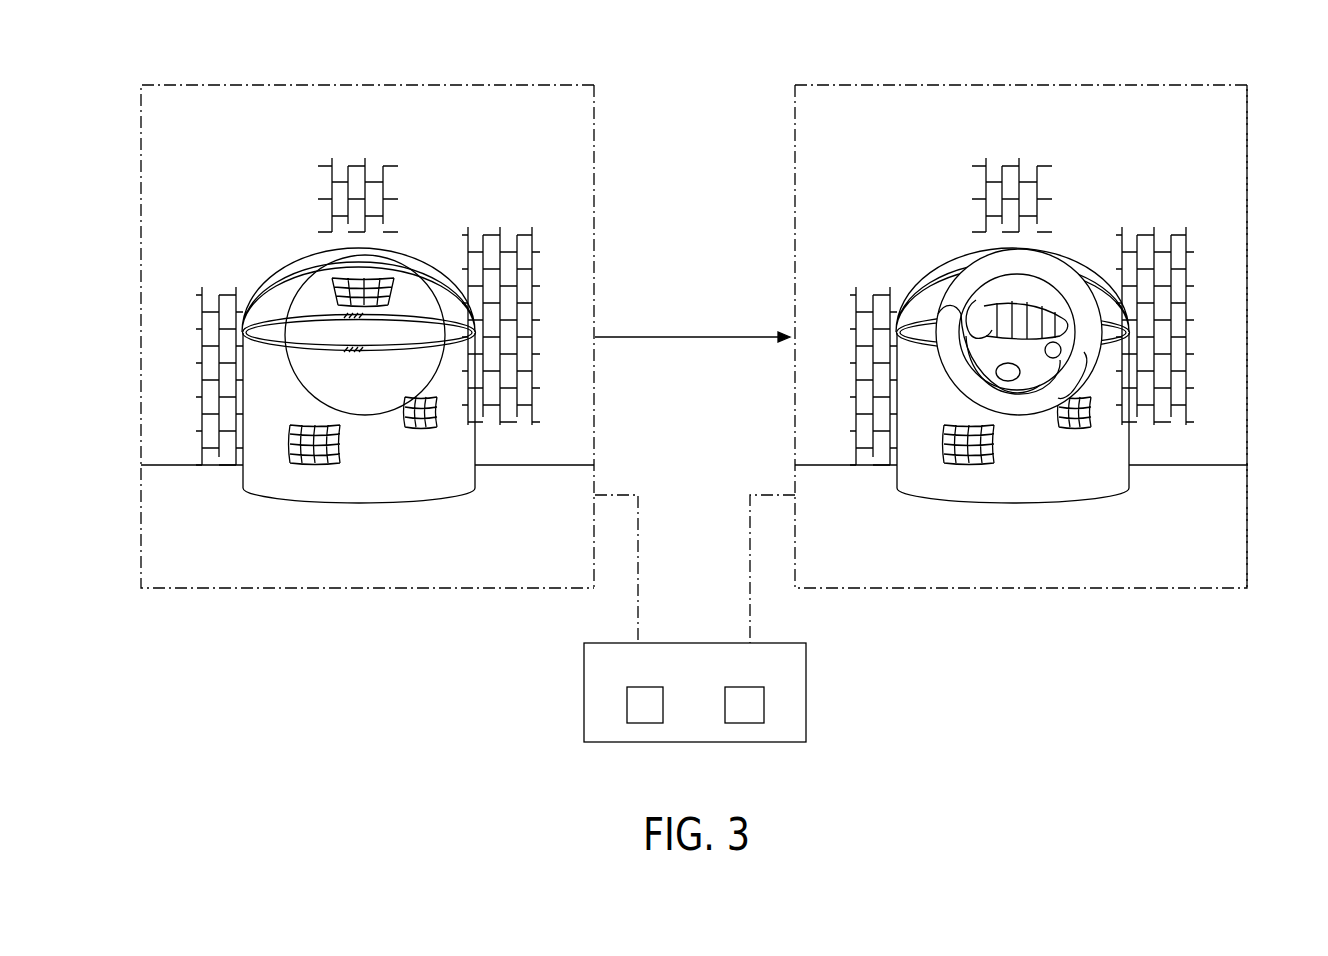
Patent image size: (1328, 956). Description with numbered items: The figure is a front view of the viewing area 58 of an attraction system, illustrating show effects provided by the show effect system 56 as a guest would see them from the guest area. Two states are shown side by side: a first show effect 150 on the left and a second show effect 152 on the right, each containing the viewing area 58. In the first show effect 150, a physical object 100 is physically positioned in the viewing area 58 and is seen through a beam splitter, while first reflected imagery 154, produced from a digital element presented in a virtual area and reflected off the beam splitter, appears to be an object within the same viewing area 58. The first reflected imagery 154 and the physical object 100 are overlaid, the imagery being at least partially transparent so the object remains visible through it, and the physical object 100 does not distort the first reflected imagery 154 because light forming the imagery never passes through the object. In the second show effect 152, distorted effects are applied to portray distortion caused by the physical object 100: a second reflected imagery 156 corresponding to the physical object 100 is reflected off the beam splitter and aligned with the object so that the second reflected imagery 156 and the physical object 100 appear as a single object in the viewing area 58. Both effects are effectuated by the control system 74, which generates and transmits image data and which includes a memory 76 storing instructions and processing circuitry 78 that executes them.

The viewing area 58 is at (616, 113).
The show effect system 56 is at (611, 163).
The physical object 100 is at (410, 263).
The second reflected imagery 156 is at (1050, 253).
The first reflected imagery 154 is at (272, 480).
The first show effect 150 is at (452, 610).
The second show effect 152 is at (1106, 610).
The control system 74 is at (732, 724).
The memory 76 is at (627, 705).
The processing circuitry 78 is at (764, 705).